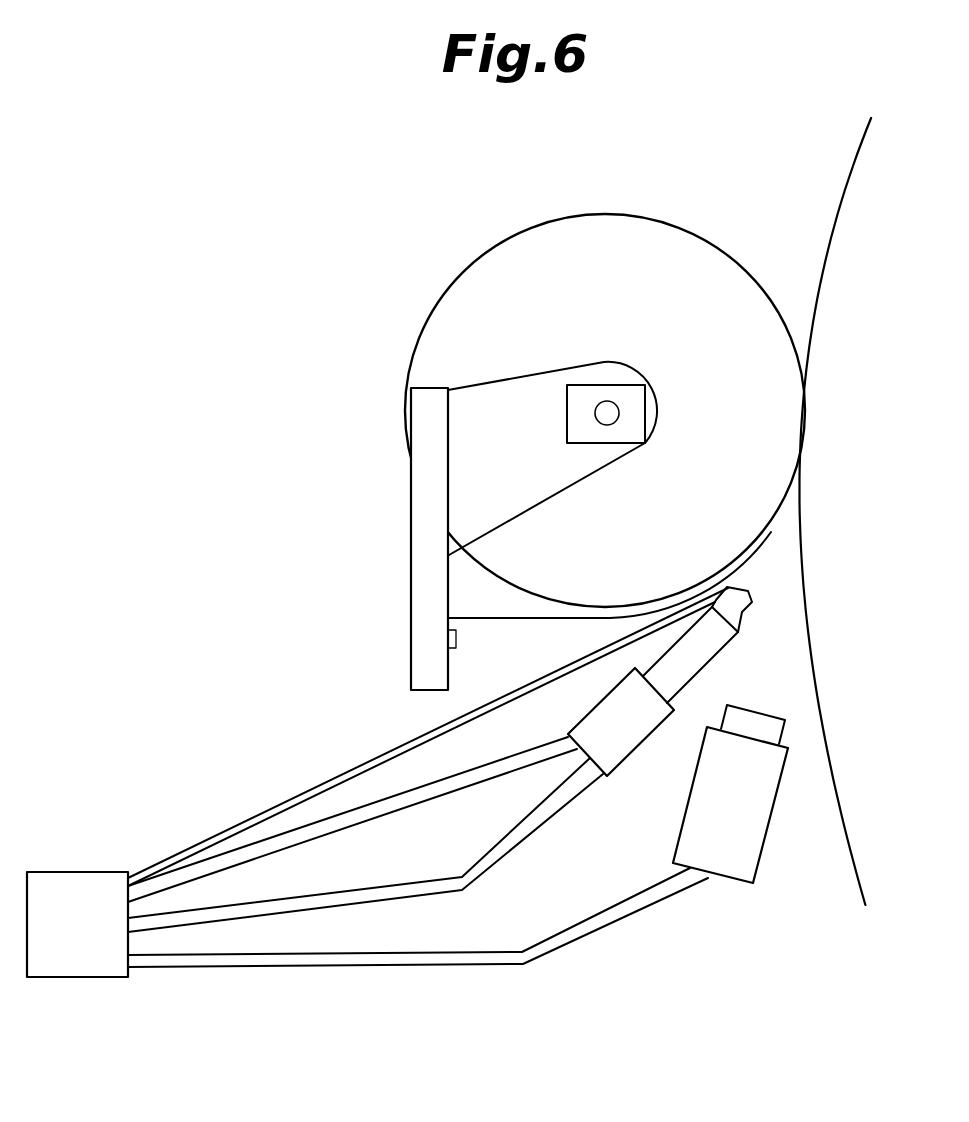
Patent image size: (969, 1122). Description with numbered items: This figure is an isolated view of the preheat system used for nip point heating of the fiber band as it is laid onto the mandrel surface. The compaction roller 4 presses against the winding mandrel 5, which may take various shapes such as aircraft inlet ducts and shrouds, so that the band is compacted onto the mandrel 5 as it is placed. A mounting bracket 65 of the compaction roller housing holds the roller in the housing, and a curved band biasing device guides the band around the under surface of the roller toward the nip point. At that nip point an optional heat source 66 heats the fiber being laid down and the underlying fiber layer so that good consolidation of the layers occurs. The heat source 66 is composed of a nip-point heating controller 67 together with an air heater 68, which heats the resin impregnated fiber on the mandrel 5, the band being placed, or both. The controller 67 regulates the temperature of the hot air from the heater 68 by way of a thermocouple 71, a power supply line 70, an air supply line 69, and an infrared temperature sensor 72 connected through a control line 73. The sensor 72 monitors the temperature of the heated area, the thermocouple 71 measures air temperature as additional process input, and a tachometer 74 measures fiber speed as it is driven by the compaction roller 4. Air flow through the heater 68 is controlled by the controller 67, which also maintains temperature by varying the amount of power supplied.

The compaction roller 4 is at (473, 260).
The winding mandrel 5 is at (826, 219).
The mounting bracket 65 is at (753, 557).
The heat source 66 is at (484, 991).
The nip-point heating controller 67 is at (70, 871).
The air heater 68 is at (610, 776).
The air supply line 69 is at (487, 862).
The power supply line 70 is at (350, 828).
The thermocouple 71 is at (400, 745).
The infrared temperature sensor 72 is at (743, 870).
The control line 73 is at (643, 903).
The tachometer 74 is at (580, 415).